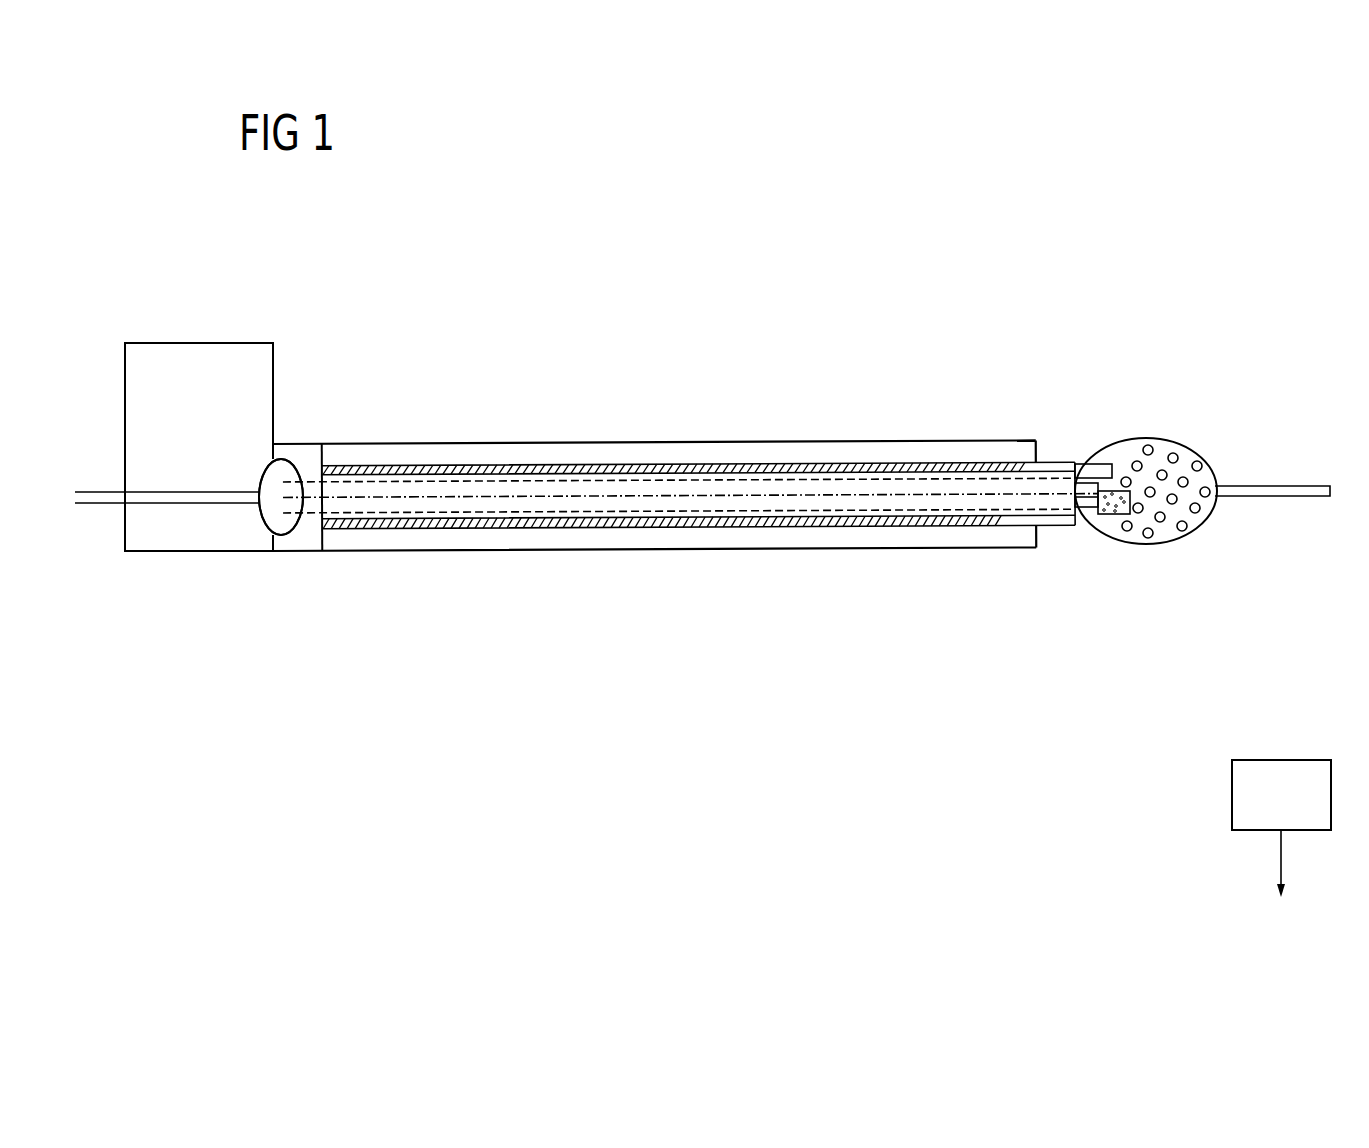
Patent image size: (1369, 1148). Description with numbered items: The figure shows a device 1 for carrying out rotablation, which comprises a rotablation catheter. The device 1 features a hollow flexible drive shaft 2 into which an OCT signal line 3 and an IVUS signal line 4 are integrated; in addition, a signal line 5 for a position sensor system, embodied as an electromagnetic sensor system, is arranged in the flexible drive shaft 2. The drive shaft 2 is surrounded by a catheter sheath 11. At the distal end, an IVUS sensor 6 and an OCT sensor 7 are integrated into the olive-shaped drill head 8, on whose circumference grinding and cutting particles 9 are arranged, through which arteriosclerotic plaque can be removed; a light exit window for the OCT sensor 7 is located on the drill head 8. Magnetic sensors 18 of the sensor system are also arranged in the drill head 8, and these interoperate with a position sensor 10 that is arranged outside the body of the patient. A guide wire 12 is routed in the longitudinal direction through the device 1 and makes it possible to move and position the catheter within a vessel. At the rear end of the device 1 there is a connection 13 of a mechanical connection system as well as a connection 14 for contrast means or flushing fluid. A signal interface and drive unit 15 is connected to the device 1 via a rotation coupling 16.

The device 1 is at (912, 396).
The flexible drive shaft 2 is at (480, 529).
The OCT signal line 3 is at (676, 495).
The IVUS signal line 4 is at (718, 478).
The signal line for position sensor system 5 is at (763, 506).
The IVUS sensor 6 is at (1097, 466).
The OCT sensor 7 is at (1088, 498).
The drill head 8 is at (1130, 438).
The grinding and cutting particles 9 is at (1199, 462).
The position sensor 10 is at (1288, 768).
The catheter sheath 11 is at (815, 441).
The guide wire 12 is at (1283, 488).
The connection of mechanical connection system 13 is at (308, 456).
The connection for contrast means or flushing fluid 14 is at (283, 455).
The signal interface and drive unit 15 is at (138, 402).
The rotation coupling 16 is at (281, 528).
The magnetic sensors 18 is at (1114, 514).